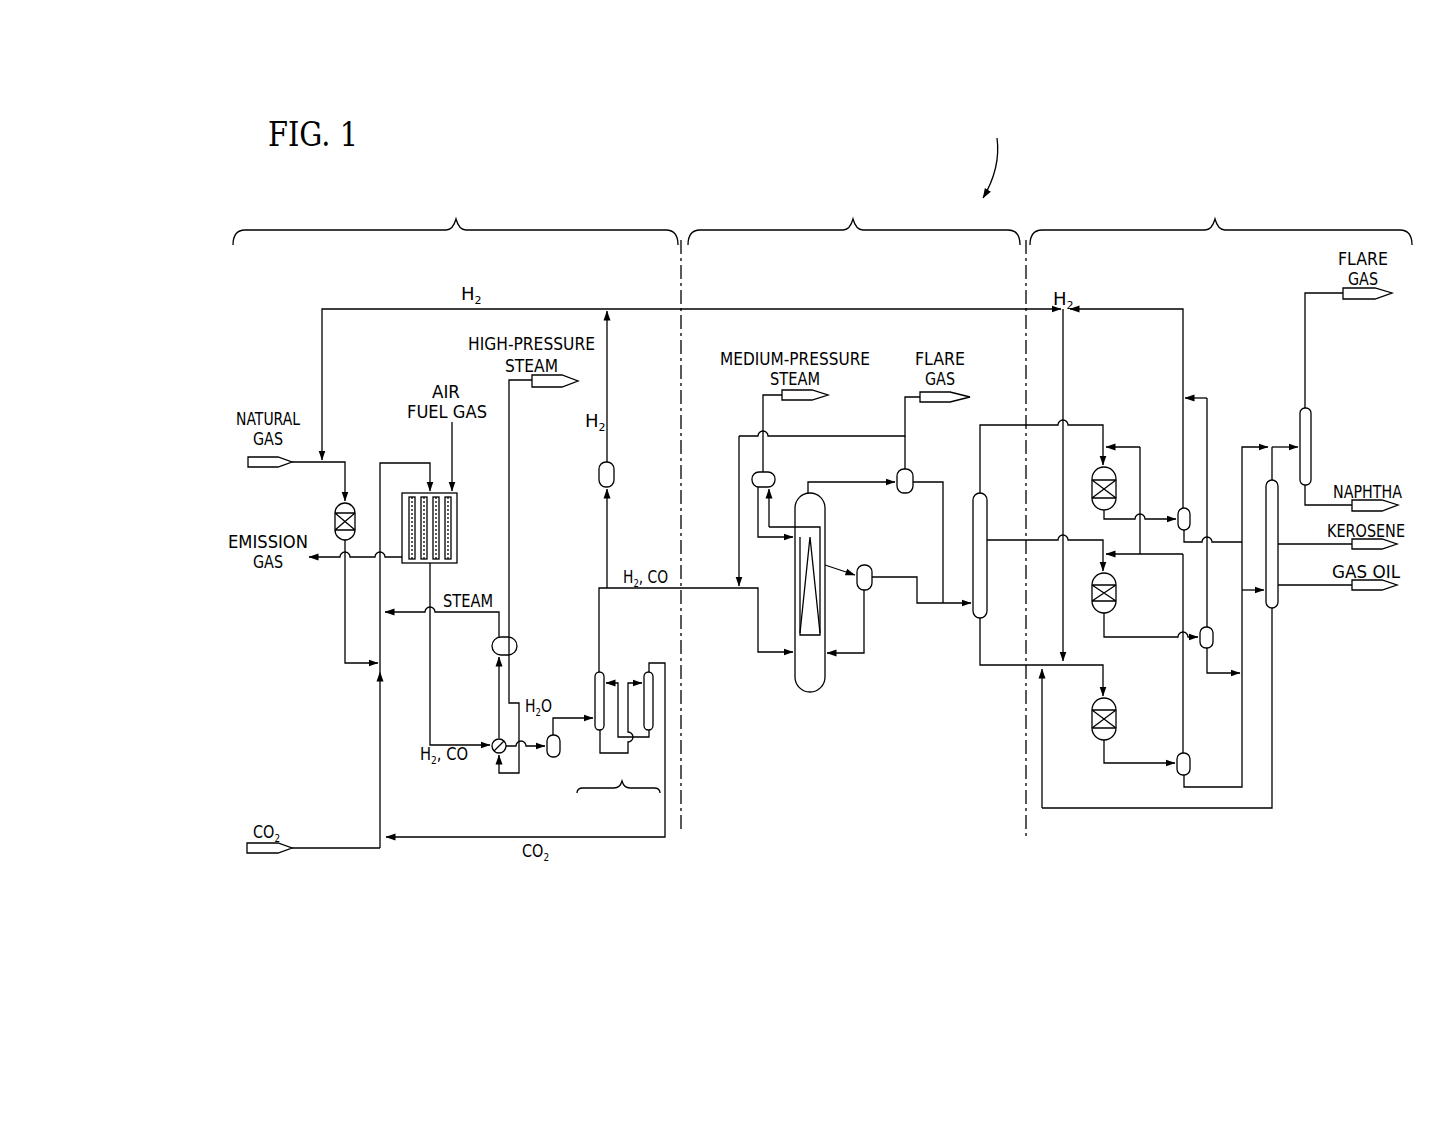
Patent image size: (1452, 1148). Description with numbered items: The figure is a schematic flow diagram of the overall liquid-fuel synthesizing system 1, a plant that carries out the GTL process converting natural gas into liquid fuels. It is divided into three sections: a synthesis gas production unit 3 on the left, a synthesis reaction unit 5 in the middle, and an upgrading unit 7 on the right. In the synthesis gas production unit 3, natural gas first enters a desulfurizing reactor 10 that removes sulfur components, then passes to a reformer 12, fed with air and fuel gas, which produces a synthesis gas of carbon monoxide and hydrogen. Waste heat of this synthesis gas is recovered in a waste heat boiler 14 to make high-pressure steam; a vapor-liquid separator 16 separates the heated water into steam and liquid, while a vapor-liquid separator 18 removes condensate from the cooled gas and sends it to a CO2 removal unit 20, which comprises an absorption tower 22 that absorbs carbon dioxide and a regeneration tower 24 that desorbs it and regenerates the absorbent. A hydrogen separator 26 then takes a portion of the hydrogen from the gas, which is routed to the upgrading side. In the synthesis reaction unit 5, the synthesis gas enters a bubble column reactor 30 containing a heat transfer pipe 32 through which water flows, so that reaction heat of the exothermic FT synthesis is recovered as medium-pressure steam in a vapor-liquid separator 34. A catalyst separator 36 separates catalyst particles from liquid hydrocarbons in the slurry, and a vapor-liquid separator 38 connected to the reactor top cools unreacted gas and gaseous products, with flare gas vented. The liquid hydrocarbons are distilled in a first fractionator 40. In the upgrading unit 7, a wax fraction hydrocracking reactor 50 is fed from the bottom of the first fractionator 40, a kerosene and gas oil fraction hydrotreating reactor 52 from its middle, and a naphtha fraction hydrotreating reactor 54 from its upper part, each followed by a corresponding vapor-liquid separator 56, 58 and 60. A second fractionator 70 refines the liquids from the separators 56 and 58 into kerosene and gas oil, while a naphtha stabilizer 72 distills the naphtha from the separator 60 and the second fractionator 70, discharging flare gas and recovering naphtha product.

The liquid-fuel synthesizing system 1 is at (1006, 134).
The synthesis gas production unit 3 is at (457, 510).
The synthesis reaction unit 5 is at (857, 515).
The upgrading unit 7 is at (1221, 217).
The desulfurizing reactor 10 is at (336, 513).
The reformer 12 is at (458, 510).
The waste heat boiler 14 is at (496, 753).
The vapor-liquid separator 16 is at (492, 643).
The vapor-liquid separator 18 is at (553, 758).
The CO2 removal unit 20 is at (618, 756).
The absorption tower 22 is at (595, 731).
The regeneration tower 24 is at (653, 731).
The hydrogen separator 26 is at (614, 470).
The bubble column reactor 30 is at (821, 692).
The heat transfer pipe 32 is at (826, 540).
The vapor-liquid separator 34 is at (775, 478).
The catalyst separator 36 is at (868, 591).
The vapor-liquid separator 38 is at (897, 472).
The first fractionator 40 is at (977, 493).
The wax fraction hydrocracking reactor 50 is at (1117, 716).
The kerosene and gas oil fraction hydrotreating reactor 52 is at (1117, 589).
The naphtha fraction hydrotreating reactor 54 is at (1116, 472).
The vapor-liquid separator 56 is at (1190, 760).
The vapor-liquid separator 58 is at (1207, 627).
The vapor-liquid separator 60 is at (1190, 512).
The second fractionator 70 is at (1280, 598).
The naphtha stabilizer 72 is at (1312, 422).